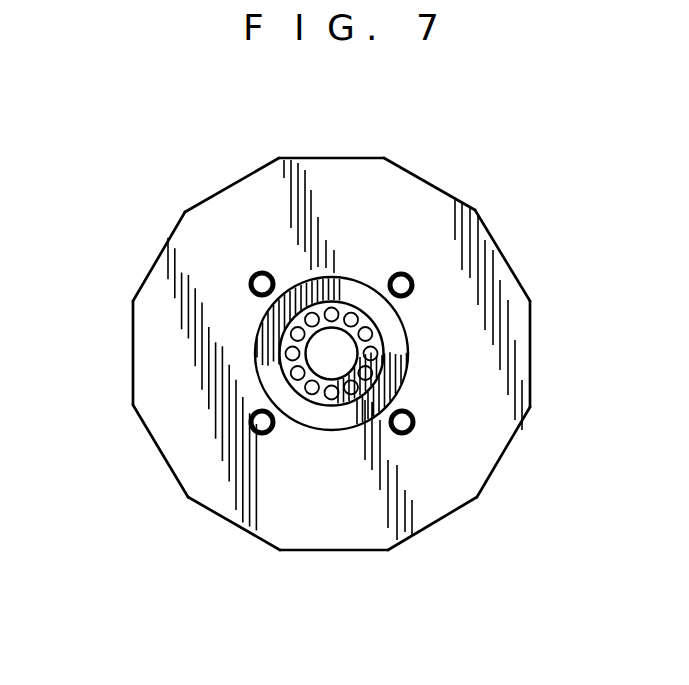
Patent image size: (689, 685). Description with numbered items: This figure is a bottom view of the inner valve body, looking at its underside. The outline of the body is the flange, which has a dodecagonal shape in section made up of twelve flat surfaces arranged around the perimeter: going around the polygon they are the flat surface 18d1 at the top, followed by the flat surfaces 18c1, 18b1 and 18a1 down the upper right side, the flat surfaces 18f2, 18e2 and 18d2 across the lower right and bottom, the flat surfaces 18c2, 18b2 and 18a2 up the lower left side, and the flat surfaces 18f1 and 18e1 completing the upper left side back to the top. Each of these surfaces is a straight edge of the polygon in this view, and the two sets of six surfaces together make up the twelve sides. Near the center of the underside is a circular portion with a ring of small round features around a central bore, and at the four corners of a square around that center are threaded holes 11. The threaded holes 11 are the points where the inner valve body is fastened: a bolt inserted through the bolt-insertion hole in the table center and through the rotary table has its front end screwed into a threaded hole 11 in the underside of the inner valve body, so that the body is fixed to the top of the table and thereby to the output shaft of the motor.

The threaded hole 11 is at (413, 292).
The flat surface 18a1 is at (530, 338).
The flat surface 18b1 is at (502, 250).
The flat surface 18c1 is at (447, 190).
The flat surface 18d1 is at (338, 157).
The flat surface 18e1 is at (230, 188).
The flat surface 18f1 is at (150, 263).
The flat surface 18a2 is at (133, 367).
The flat surface 18b2 is at (157, 447).
The flat surface 18c2 is at (232, 522).
The flat surface 18d2 is at (330, 550).
The flat surface 18e2 is at (415, 530).
The flat surface 18f2 is at (502, 458).